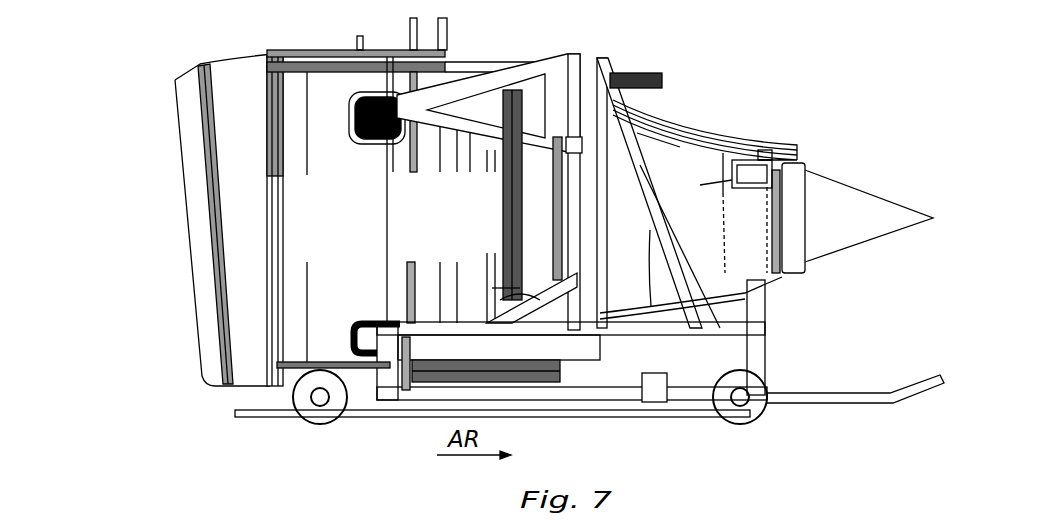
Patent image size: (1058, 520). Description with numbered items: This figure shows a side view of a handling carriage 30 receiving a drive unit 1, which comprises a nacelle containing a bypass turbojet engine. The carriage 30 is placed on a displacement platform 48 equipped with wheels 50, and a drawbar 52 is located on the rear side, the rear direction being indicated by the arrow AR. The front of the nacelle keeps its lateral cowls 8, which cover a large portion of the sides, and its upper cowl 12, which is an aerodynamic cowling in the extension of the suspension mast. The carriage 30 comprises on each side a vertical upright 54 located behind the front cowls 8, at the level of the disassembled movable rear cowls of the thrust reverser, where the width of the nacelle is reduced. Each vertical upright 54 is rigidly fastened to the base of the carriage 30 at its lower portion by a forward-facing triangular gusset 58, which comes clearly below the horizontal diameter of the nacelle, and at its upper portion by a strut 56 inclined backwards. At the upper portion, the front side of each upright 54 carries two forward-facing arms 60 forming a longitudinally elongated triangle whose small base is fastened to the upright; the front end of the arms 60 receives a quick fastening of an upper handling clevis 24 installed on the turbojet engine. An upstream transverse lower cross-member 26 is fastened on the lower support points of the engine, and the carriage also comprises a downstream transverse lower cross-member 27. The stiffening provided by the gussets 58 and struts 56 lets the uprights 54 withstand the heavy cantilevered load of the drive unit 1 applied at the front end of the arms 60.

The drive unit 1 is at (160, 256).
The lateral cowls 8 is at (325, 97).
The upper cowl 12 is at (297, 57).
The upper handling clevis 24 is at (364, 140).
The upstream transverse lower cross-member 26 is at (395, 403).
The downstream transverse lower cross-member 27 is at (768, 356).
The handling carriage 30 is at (588, 360).
The displacement platform 48 is at (635, 402).
The wheels 50 is at (740, 423).
The drawbar 52 is at (810, 403).
The vertical upright 54 is at (600, 203).
The strut 56 is at (657, 160).
The triangular gusset 58 is at (553, 315).
The arms 60 is at (547, 73).